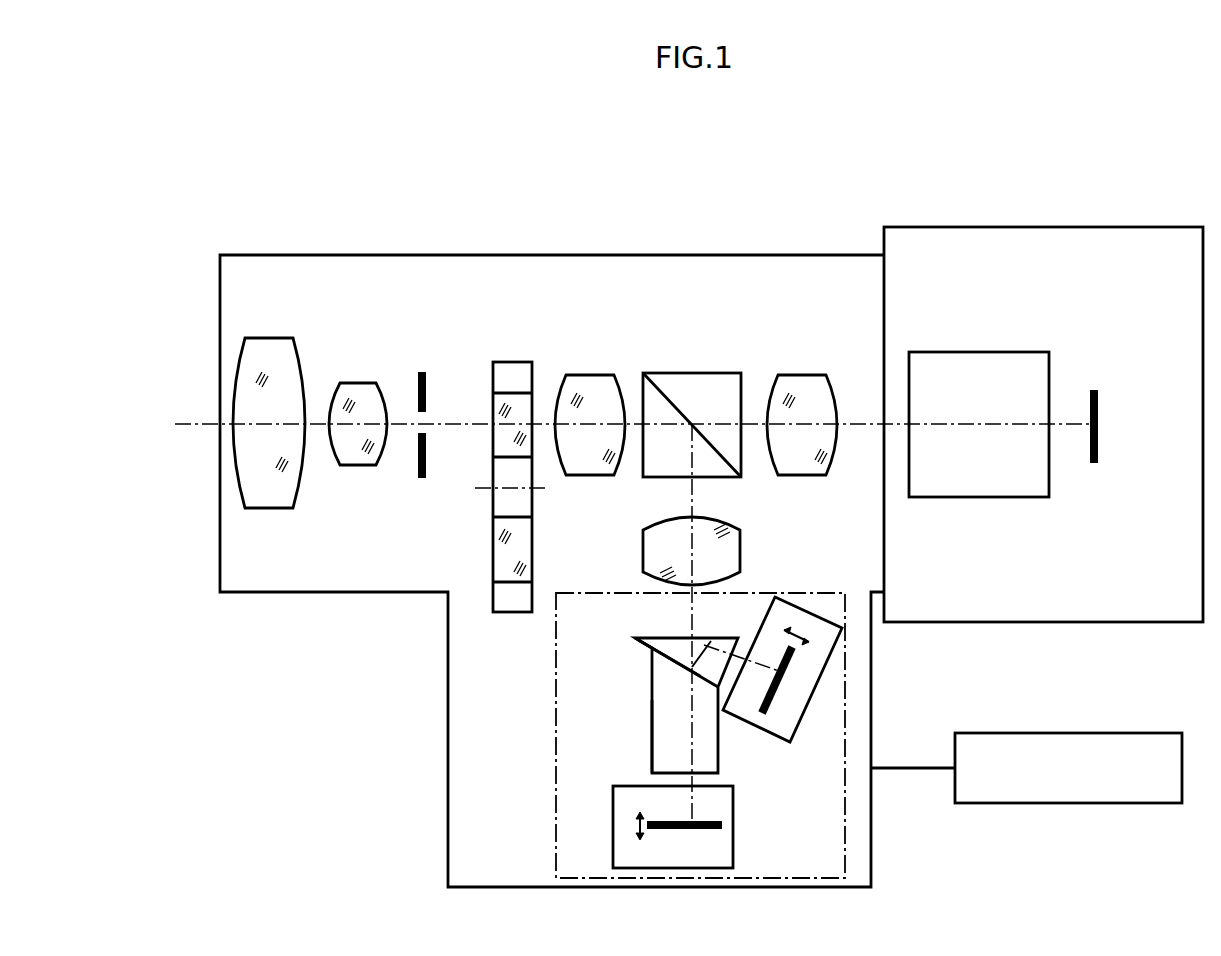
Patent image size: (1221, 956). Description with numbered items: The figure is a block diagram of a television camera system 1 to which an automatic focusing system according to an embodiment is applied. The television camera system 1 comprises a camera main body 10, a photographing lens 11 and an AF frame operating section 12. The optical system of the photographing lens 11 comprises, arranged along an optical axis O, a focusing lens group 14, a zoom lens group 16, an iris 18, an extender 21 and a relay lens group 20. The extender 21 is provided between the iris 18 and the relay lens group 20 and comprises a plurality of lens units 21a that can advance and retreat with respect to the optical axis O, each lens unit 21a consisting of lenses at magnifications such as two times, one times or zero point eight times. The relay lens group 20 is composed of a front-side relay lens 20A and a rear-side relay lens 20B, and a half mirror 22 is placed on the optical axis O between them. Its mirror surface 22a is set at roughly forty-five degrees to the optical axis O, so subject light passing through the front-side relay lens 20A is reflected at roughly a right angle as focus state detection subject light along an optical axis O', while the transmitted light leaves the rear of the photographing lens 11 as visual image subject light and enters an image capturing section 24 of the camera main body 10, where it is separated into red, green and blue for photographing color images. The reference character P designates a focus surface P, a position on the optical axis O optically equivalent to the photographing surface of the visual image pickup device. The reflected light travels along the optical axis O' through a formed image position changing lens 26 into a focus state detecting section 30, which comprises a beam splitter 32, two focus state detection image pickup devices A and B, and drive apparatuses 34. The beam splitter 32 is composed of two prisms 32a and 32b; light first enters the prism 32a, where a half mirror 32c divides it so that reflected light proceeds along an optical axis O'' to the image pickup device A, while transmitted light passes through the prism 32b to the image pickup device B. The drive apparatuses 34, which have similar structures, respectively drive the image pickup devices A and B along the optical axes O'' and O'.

The television camera system 1 is at (817, 199).
The camera main body 10 is at (1041, 227).
The photographing lens 11 is at (720, 256).
The AF frame operating section 12 is at (1052, 733).
The focusing lens group 14 is at (268, 336).
The zoom lens group 16 is at (356, 384).
The iris 18 is at (422, 372).
The relay lens group 20 is at (560, 323).
The front-side relay lens 20A is at (589, 375).
The rear-side relay lens 20B is at (798, 375).
The extender 21 is at (509, 362).
The lens unit 21a is at (492, 442).
The half mirror 22 is at (688, 373).
The mirror surface 22a is at (693, 420).
The image capturing section 24 is at (980, 352).
The formed image position changing lens 26 is at (643, 550).
The focus state detecting section 30 is at (556, 707).
The beam splitter 32 is at (652, 699).
The prism 32a is at (716, 642).
The prism 32b is at (652, 741).
The half mirror 32c is at (657, 641).
The drive apparatus 34 is at (828, 614).
The focus state detection image pickup device A is at (760, 715).
The focus state detection image pickup device B is at (735, 826).
The optical axis O is at (182, 453).
The optical axis O' is at (727, 496).
The optical axis O'' is at (750, 609).
The focus surface P is at (1097, 390).